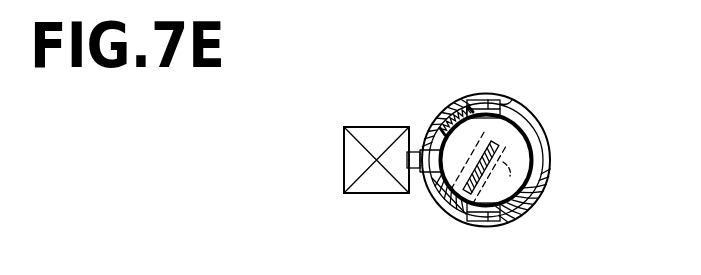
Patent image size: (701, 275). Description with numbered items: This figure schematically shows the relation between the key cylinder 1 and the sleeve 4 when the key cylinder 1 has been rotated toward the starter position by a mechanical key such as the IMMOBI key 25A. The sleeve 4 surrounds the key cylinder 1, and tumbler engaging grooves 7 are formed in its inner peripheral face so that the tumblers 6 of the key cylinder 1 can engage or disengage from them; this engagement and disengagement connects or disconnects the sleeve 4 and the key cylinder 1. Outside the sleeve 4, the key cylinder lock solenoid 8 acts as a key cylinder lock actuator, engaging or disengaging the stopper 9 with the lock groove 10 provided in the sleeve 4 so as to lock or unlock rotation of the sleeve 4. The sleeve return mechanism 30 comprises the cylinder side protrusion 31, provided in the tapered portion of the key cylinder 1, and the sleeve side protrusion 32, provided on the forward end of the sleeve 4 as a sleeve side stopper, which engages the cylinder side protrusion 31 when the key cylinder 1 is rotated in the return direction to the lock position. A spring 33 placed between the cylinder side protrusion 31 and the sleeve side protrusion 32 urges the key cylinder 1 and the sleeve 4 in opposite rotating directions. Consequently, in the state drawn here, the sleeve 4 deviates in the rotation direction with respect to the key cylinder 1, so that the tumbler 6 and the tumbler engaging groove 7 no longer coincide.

The key cylinder 1 is at (547, 144).
The sleeve 4 is at (547, 168).
The tumbler 6 is at (552, 187).
The tumbler engaging groove 7 is at (527, 105).
The key cylinder lock solenoid 8 is at (343, 160).
The stopper 9 is at (420, 173).
The lock groove 10 is at (446, 200).
The IMMOBI key 25A is at (484, 222).
The sleeve return mechanism 30 is at (485, 84).
The cylinder side protrusion 31 is at (500, 104).
The sleeve side protrusion 32 is at (446, 120).
The spring 33 is at (470, 100).